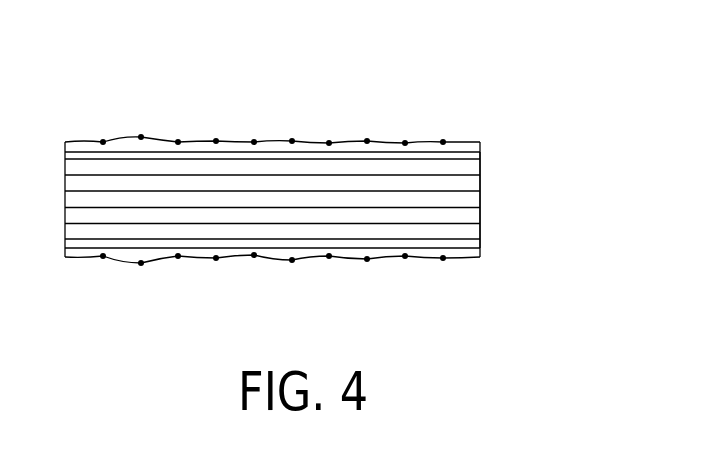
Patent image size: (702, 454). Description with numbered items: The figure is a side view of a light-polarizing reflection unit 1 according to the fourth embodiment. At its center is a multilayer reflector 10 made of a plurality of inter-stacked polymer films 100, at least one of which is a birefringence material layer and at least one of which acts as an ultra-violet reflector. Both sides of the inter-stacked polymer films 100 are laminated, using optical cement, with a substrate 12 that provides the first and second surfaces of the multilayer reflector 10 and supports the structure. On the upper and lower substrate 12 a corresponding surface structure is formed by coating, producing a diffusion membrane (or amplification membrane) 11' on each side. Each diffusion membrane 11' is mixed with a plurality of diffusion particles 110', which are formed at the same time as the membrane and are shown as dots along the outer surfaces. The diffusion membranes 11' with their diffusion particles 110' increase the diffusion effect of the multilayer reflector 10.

The light-polarizing reflection unit 1 is at (505, 88).
The multilayer reflector 10 is at (553, 188).
The inter-stacked polymer films 100 is at (485, 158).
The substrate 12 is at (473, 154).
The diffusion membrane (or amplification membrane) 11' is at (305, 199).
The diffusion particles 110' is at (282, 199).